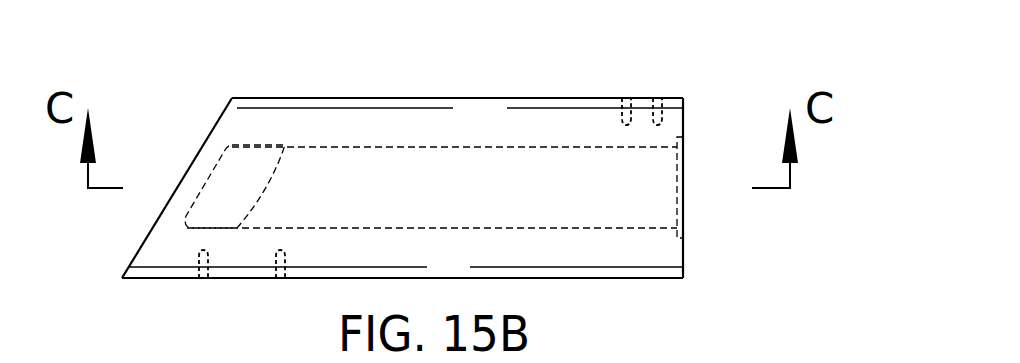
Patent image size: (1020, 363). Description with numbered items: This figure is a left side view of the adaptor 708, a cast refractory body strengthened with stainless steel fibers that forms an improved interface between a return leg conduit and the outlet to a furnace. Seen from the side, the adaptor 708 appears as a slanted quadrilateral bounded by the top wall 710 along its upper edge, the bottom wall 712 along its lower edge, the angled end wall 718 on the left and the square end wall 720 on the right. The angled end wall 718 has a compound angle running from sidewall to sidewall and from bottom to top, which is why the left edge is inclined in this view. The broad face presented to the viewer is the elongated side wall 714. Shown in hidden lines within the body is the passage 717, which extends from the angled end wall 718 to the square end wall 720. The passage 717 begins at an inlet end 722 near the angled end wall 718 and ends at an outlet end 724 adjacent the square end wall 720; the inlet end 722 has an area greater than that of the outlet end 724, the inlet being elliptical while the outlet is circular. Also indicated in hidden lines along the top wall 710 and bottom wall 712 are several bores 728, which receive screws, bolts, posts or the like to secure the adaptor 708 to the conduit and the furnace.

The adaptor 708 is at (222, 52).
The top wall 710 is at (460, 98).
The bottom wall 712 is at (570, 278).
The elongated side wall 714 is at (473, 136).
The passage 717 is at (473, 195).
The angled end wall 718 is at (137, 252).
The square end wall 720 is at (683, 255).
The inlet end 722 is at (257, 194).
The outlet end 724 is at (683, 182).
The bores 728 is at (628, 98).